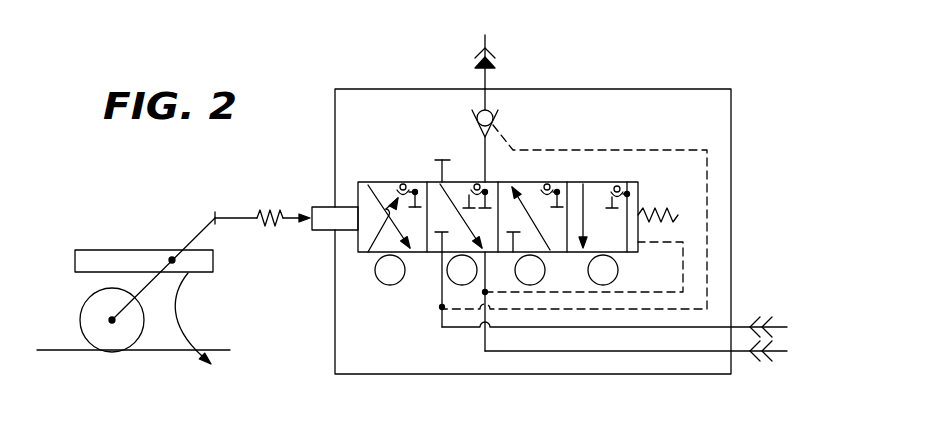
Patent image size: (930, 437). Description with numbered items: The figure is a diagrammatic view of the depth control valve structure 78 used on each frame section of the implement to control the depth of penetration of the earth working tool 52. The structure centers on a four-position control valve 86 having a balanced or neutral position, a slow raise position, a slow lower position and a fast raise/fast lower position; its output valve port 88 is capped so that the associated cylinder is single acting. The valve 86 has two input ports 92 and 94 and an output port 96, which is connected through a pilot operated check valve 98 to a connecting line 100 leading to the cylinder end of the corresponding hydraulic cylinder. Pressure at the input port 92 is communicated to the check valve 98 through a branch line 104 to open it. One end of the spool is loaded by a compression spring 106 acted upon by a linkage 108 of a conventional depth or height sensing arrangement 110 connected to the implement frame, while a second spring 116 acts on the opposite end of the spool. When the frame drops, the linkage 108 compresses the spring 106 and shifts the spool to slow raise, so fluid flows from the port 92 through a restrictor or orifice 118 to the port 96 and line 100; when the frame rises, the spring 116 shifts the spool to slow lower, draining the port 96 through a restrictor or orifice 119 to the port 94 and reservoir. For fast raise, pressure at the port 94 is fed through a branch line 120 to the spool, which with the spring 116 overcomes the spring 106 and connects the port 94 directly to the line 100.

The earth working tool 52 is at (203, 336).
The depth control valve structure 78 is at (667, 77).
The four-position control valve 86 is at (519, 219).
The capped output valve port 88 is at (438, 168).
The input port 92 is at (438, 297).
The input port 94 is at (483, 342).
The output port 96 is at (485, 157).
The check valve 98 is at (495, 120).
The connecting line 100 is at (487, 39).
The branch line 104 is at (673, 150).
The compression spring 106 is at (262, 213).
The linkage 108 is at (163, 262).
The depth or height sensing arrangement 110 is at (133, 270).
The second spring 116 is at (645, 208).
The restrictor or orifice 118 is at (398, 184).
The restrictor or orifice 119 is at (547, 181).
The branch line 120 is at (683, 270).